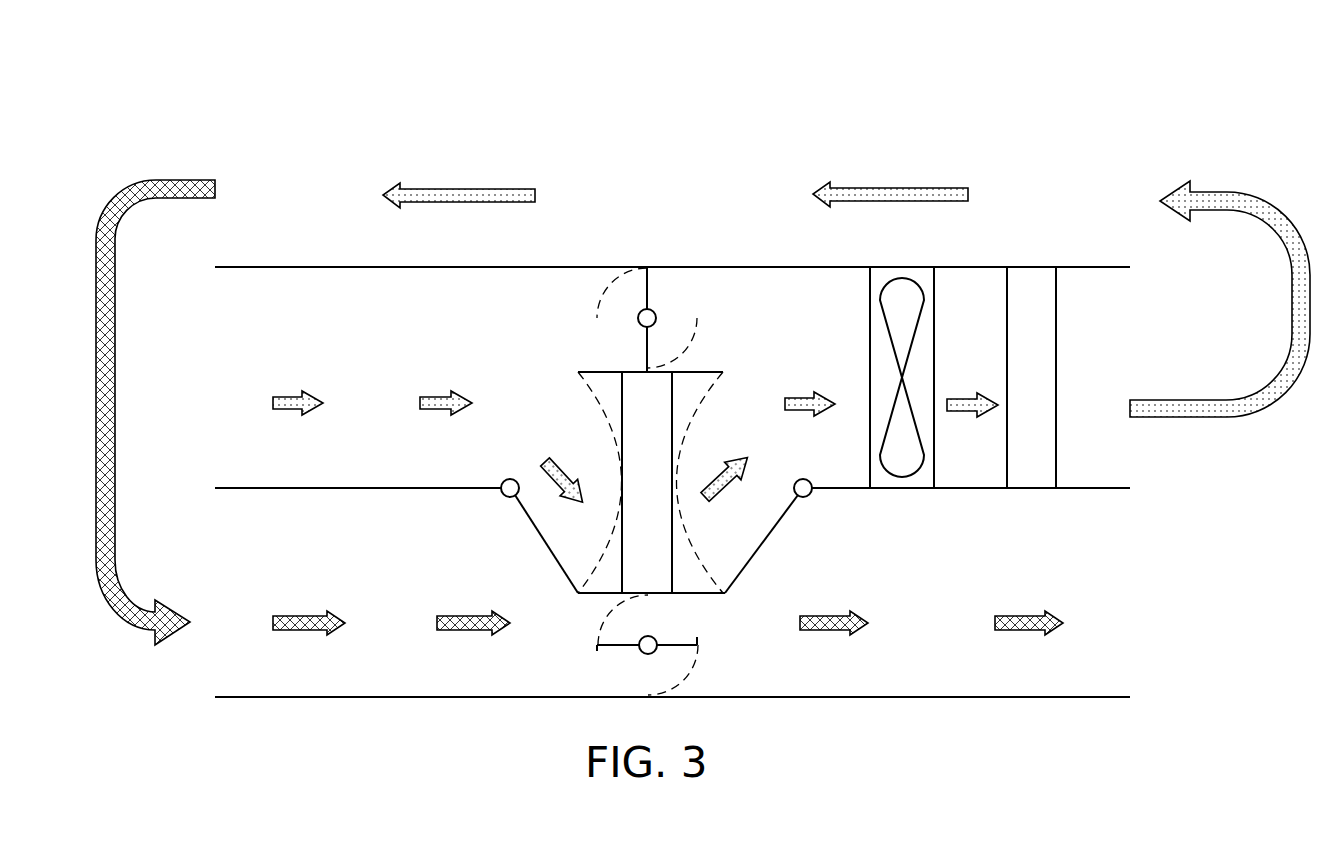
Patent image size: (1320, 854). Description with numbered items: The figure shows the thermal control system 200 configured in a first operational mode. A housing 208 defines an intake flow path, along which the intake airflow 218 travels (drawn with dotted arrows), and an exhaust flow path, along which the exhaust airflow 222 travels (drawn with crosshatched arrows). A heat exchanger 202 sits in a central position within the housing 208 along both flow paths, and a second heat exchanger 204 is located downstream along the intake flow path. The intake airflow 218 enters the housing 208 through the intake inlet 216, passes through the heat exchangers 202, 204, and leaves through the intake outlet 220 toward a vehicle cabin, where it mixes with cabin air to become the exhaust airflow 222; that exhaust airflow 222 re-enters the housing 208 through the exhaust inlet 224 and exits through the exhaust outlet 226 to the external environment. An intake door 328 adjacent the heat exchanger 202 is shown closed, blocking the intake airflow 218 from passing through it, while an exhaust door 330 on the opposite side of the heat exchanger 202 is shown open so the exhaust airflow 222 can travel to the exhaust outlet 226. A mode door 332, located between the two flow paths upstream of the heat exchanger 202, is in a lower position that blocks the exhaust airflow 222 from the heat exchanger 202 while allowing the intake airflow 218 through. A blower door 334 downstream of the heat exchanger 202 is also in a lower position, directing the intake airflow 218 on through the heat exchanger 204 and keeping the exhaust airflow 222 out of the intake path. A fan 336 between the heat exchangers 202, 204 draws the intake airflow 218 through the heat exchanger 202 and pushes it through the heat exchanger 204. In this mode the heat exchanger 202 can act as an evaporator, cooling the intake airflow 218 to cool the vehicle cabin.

The thermal control system 200 is at (1128, 138).
The heat exchanger 202 is at (667, 499).
The heat exchanger 204 is at (1050, 402).
The housing 208 is at (312, 267).
The intake inlet 216 is at (222, 270).
The intake airflow 218 is at (432, 189).
The intake outlet 220 is at (1120, 270).
The exhaust airflow 222 is at (157, 180).
The exhaust inlet 224 is at (222, 697).
The exhaust outlet 226 is at (1120, 697).
The intake door 328 is at (652, 297).
The exhaust door 330 is at (620, 645).
The mode door 332 is at (532, 525).
The blower door 334 is at (782, 516).
The fan 336 is at (870, 335).